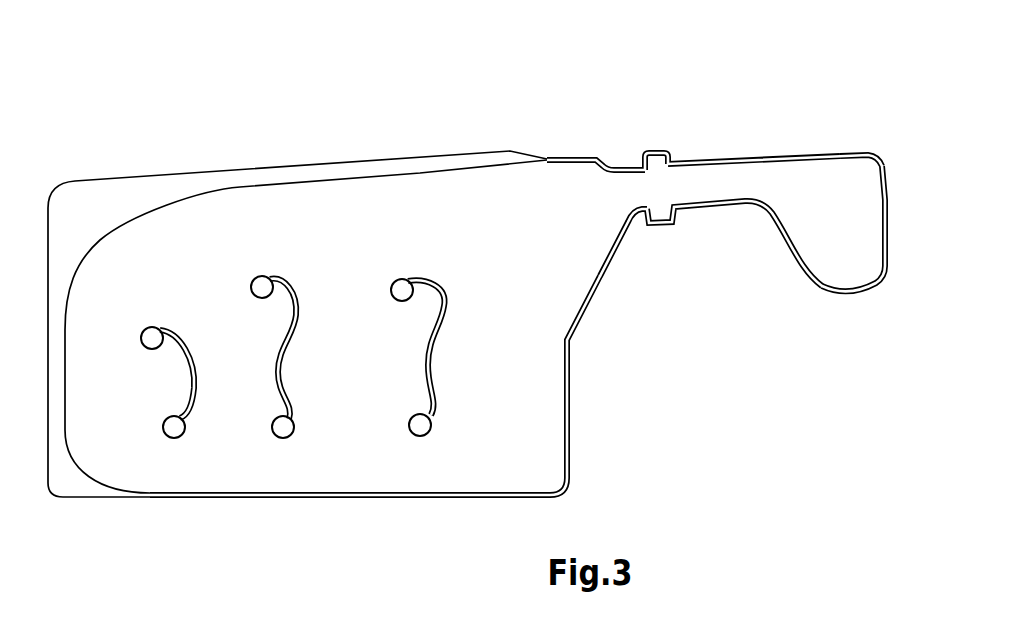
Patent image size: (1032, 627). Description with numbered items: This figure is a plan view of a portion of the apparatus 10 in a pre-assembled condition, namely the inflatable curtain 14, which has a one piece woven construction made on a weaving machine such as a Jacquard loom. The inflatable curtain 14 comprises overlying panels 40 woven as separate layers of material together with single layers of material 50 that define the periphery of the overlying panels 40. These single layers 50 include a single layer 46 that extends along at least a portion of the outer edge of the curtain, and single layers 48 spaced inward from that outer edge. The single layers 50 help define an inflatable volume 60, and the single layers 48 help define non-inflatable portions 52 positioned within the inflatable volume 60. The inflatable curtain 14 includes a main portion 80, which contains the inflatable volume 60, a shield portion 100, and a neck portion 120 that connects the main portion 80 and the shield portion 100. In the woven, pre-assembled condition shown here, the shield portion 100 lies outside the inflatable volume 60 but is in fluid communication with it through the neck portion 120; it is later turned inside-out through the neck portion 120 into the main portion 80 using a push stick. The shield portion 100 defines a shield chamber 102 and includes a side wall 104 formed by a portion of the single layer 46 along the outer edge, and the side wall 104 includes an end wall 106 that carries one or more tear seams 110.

The instrument tray 10 is at (405, 109).
The inflatable curtain 14 is at (741, 79).
The overlying panels 40 is at (258, 218).
The single layer 46 is at (503, 497).
The single layers 48 is at (198, 395).
The single layers of material 50 is at (189, 357).
The non-inflatable portions 52 is at (152, 338).
The inflatable volume 60 is at (332, 210).
The main portion 80 is at (352, 508).
The shield portion 100 is at (803, 302).
The shield chamber 102 is at (823, 220).
The side wall 104 is at (835, 152).
The end wall 106 is at (888, 280).
The tear seams 110 is at (887, 197).
The neck portion 120 is at (700, 183).